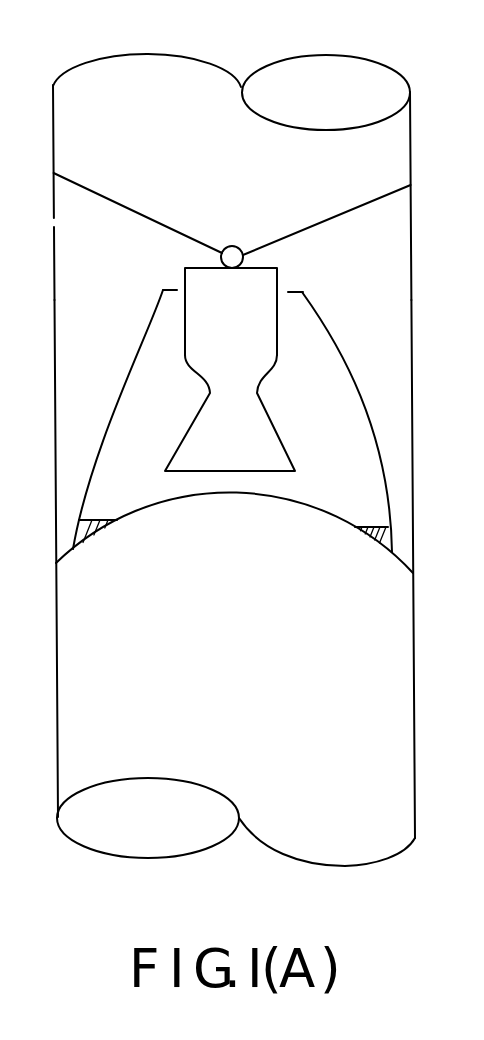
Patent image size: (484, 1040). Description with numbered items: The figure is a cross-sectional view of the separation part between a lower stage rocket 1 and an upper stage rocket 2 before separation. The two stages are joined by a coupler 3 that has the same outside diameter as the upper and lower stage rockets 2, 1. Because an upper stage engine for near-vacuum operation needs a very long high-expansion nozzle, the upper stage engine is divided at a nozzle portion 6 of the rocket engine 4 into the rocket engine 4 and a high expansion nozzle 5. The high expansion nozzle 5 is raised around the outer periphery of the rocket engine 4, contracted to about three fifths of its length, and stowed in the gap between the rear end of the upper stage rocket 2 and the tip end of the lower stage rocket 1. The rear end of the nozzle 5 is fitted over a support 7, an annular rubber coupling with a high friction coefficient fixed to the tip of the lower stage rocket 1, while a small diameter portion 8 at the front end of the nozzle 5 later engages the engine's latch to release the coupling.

The lower stage rocket 1 is at (383, 842).
The upper stage rocket 2 is at (377, 82).
The coupler 3 is at (65, 227).
The rocket engine 4 is at (268, 281).
The high expansion nozzle 5 is at (342, 362).
The nozzle portion 6 is at (275, 423).
The support 7 is at (84, 529).
The small diameter portion 8 is at (303, 291).